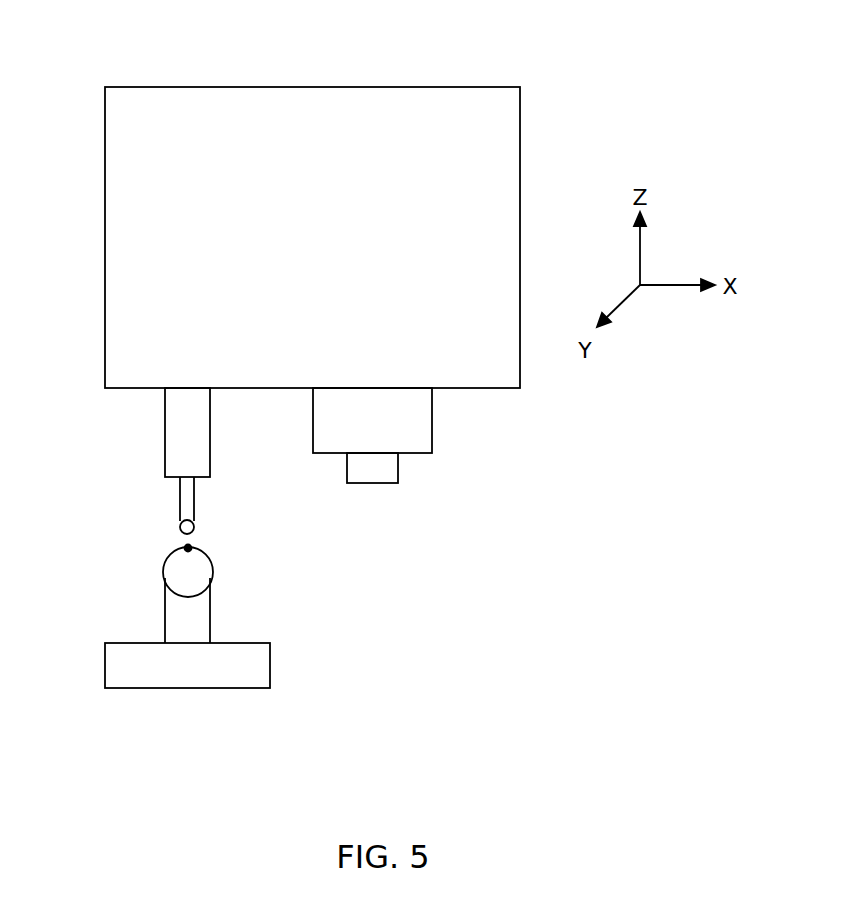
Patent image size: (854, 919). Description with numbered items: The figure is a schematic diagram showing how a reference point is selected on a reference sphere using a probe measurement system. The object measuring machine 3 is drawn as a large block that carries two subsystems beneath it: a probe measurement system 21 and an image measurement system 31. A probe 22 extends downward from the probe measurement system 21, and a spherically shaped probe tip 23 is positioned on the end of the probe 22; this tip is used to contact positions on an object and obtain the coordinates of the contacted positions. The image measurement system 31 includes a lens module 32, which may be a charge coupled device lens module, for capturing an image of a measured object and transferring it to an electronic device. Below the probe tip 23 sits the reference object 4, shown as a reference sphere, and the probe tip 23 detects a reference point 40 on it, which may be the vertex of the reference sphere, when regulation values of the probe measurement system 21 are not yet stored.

The object measuring machine 3 is at (313, 87).
The probe measurement system 21 is at (165, 427).
The probe 22 is at (196, 511).
The probe tip 23 is at (180, 518).
The reference object 4 is at (164, 566).
The reference point 40 is at (190, 547).
The image measurement system 31 is at (432, 420).
The lens module 32 is at (398, 467).